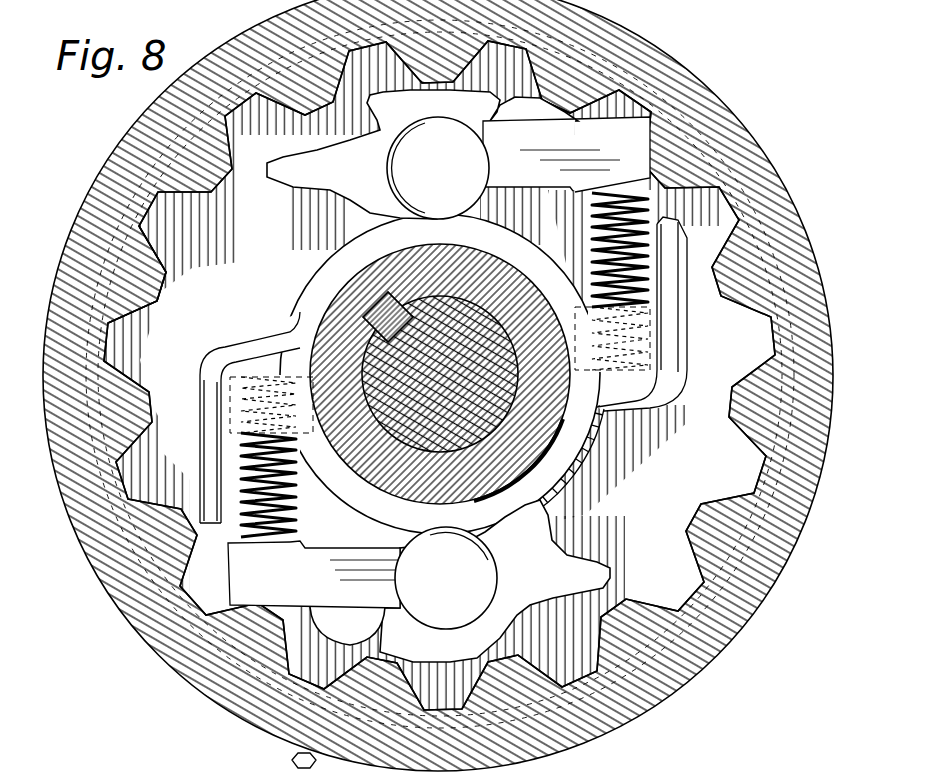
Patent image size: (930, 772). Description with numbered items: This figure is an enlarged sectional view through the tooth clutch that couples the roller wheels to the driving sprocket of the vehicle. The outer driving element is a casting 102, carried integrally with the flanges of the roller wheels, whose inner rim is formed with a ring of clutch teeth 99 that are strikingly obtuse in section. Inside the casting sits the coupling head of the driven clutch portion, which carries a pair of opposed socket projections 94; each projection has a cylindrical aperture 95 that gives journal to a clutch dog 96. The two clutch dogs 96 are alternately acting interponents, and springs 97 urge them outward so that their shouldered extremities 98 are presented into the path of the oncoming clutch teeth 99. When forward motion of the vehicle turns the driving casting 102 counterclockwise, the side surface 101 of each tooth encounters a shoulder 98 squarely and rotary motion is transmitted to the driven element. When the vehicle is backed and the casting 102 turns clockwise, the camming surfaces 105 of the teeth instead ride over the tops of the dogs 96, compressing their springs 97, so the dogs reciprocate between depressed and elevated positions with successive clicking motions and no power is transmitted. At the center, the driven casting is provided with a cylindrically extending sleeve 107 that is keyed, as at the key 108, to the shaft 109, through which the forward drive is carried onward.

The socket projections 94 is at (383, 124).
The cylindrical apertures 95 is at (390, 158).
The clutch dogs 96 is at (537, 172).
The springs 97 is at (592, 236).
The shouldered extremities 98 is at (640, 125).
The clutch teeth 99 is at (740, 290).
The side surface 101 is at (435, 75).
The casting 102 is at (735, 113).
The camming surfaces 105 is at (172, 257).
The sleeve 107 is at (345, 310).
The key 108 is at (410, 330).
The shaft 109 is at (380, 318).